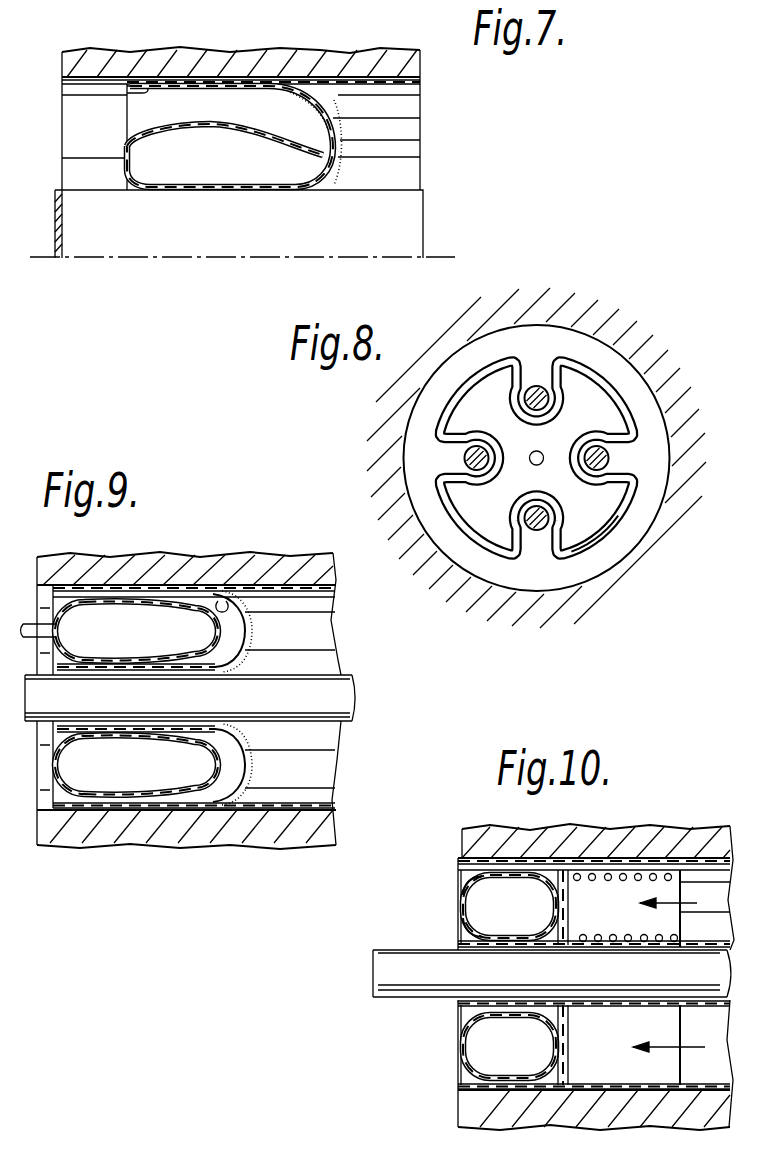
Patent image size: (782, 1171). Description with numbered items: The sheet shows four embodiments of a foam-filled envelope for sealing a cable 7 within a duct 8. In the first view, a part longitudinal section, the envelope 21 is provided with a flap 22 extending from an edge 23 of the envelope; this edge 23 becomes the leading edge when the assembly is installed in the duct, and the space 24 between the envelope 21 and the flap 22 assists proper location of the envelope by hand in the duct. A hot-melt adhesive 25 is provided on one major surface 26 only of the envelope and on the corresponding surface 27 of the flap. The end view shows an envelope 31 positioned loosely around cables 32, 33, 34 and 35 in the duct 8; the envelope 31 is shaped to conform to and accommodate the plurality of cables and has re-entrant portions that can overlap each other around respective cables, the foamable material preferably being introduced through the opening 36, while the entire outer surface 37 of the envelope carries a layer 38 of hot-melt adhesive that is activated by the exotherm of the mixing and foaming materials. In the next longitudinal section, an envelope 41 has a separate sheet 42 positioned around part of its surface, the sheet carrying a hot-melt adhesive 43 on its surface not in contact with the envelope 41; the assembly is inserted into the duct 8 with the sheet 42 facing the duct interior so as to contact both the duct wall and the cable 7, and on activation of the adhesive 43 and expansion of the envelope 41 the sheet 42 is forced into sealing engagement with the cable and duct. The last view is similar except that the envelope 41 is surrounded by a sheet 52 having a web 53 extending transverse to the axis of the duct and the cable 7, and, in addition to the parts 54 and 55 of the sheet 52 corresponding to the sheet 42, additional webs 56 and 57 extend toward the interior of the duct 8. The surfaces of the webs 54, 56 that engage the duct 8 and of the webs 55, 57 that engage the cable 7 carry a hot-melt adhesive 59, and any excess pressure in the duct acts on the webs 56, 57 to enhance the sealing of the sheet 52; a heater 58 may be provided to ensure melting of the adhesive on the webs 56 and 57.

In FIG. 7, the cable 7 is at (200, 240).
In FIG. 9, the cable 7 is at (340, 692).
In FIG. 7, the duct 8 is at (66, 90).
In FIG. 8, the duct 8 is at (462, 560).
In FIG. 9, the duct 8 is at (293, 597).
In FIG. 7, the envelope 21 is at (120, 165).
In FIG. 7, the flap 22 is at (140, 96).
In FIG. 7, the edge 23 is at (340, 134).
In FIG. 7, the space 24 is at (272, 119).
In FIG. 7, the hot-melt adhesive 25 is at (329, 108).
In FIG. 7, the major surface 26 is at (182, 195).
In FIG. 7, the surface of the flap 27 is at (393, 78).
In FIG. 8, the envelope 31 is at (632, 498).
In FIG. 8, the cable 32 is at (539, 385).
In FIG. 8, the cable 33 is at (464, 458).
In FIG. 8, the cable 34 is at (538, 531).
In FIG. 8, the cable 35 is at (609, 458).
In FIG. 8, the opening 36 is at (549, 452).
In FIG. 8, the outer surface 37 is at (606, 548).
In FIG. 8, the layer of hot-melt adhesive 38 is at (504, 360).
In FIG. 9, the envelope 41 is at (68, 608).
In FIG. 10, the envelope 41 is at (492, 895).
In FIG. 9, the sheet 42 is at (227, 599).
In FIG. 9, the hot-melt adhesive 43 is at (195, 598).
In FIG. 10, the sheet 52 is at (558, 868).
In FIG. 10, the web 53 is at (570, 913).
In FIG. 10, the web 54 is at (465, 876).
In FIG. 10, the web 55 is at (467, 943).
In FIG. 10, the web 56 is at (672, 868).
In FIG. 10, the web 57 is at (682, 942).
In FIG. 10, the heater 58 is at (645, 937).
In FIG. 10, the hot-melt adhesive 59 is at (537, 867).